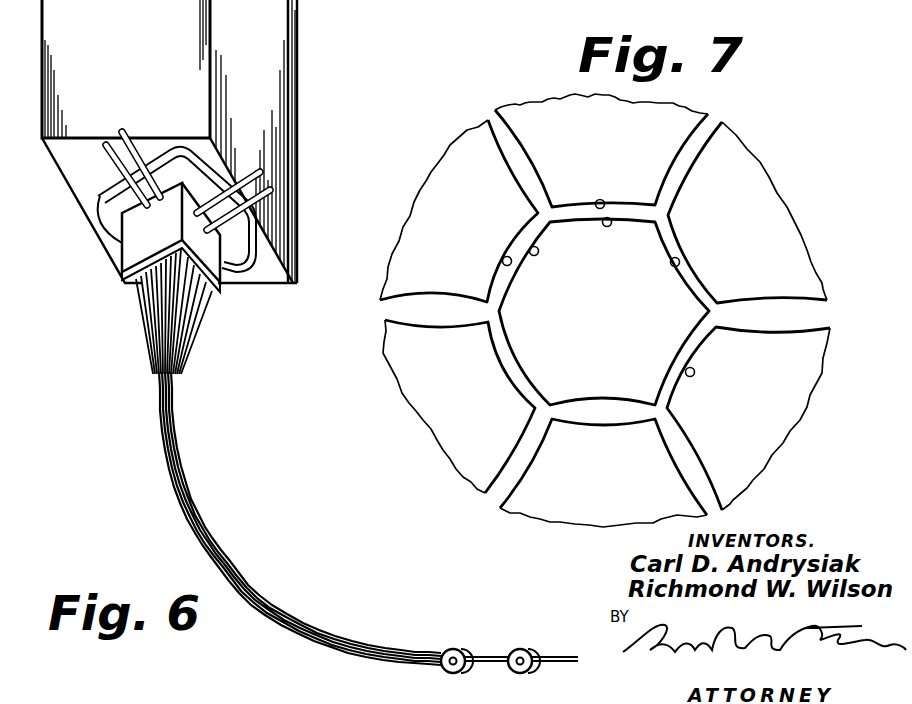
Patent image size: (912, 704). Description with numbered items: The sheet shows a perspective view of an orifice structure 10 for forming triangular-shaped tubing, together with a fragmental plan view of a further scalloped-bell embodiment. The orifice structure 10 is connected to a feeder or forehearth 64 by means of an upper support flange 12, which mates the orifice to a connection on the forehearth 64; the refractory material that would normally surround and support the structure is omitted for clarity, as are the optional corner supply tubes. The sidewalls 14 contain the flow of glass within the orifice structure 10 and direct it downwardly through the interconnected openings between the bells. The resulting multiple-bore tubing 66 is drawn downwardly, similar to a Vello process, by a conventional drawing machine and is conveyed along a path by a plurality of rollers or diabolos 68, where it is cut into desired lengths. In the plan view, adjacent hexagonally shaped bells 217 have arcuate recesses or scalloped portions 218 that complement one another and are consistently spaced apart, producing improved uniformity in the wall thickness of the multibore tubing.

In FIG. 6, the orifice structure 10 is at (100, 216).
In FIG. 6, the upper support flange 12 is at (236, 262).
In FIG. 6, the sidewalls 14 is at (135, 247).
In FIG. 6, the feeder or forehearth 64 is at (285, 30).
In FIG. 6, the multiple-bore tubing 66 is at (190, 478).
In FIG. 6, the rollers or diabolos 68 is at (521, 648).
In FIG. 7, the hexagonally shaped bells 217 is at (790, 232).
In FIG. 7, the arcuate recesses or scalloped portions 218 is at (600, 199).